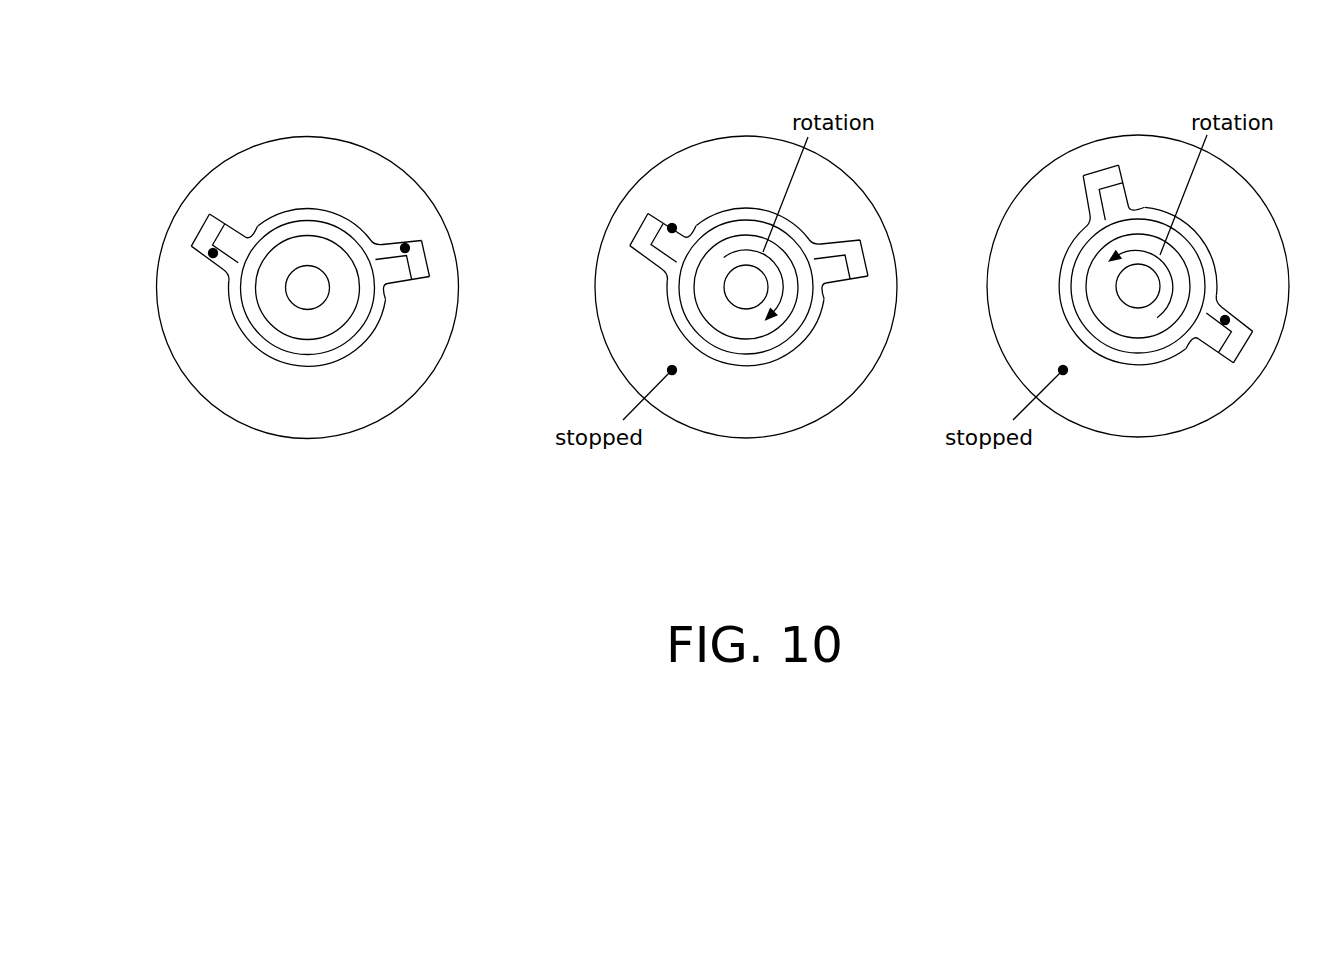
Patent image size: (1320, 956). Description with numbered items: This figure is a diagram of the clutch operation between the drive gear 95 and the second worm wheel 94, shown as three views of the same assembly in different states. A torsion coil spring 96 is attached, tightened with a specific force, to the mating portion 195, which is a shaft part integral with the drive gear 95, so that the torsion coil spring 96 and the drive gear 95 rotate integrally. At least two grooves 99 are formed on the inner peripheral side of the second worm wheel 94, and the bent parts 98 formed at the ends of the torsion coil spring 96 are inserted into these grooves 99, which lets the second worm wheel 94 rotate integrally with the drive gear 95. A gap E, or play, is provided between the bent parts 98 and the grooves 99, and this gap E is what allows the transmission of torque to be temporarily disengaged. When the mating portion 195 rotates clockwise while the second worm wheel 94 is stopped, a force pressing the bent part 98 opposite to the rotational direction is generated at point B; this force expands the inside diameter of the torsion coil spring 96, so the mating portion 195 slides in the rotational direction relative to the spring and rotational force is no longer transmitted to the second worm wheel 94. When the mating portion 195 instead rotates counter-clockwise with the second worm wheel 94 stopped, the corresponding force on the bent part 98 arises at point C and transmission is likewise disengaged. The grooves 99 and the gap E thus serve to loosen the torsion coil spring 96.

The second worm wheel 94 is at (387, 363).
The mating portion 195 is at (240, 345).
The drive gear 95 is at (285, 311).
The torsion coil spring 96 is at (335, 240).
The bent parts 98 is at (237, 240).
The grooves 99 is at (211, 217).
The gap E is at (405, 248).
The point B is at (672, 228).
The point C is at (1225, 320).